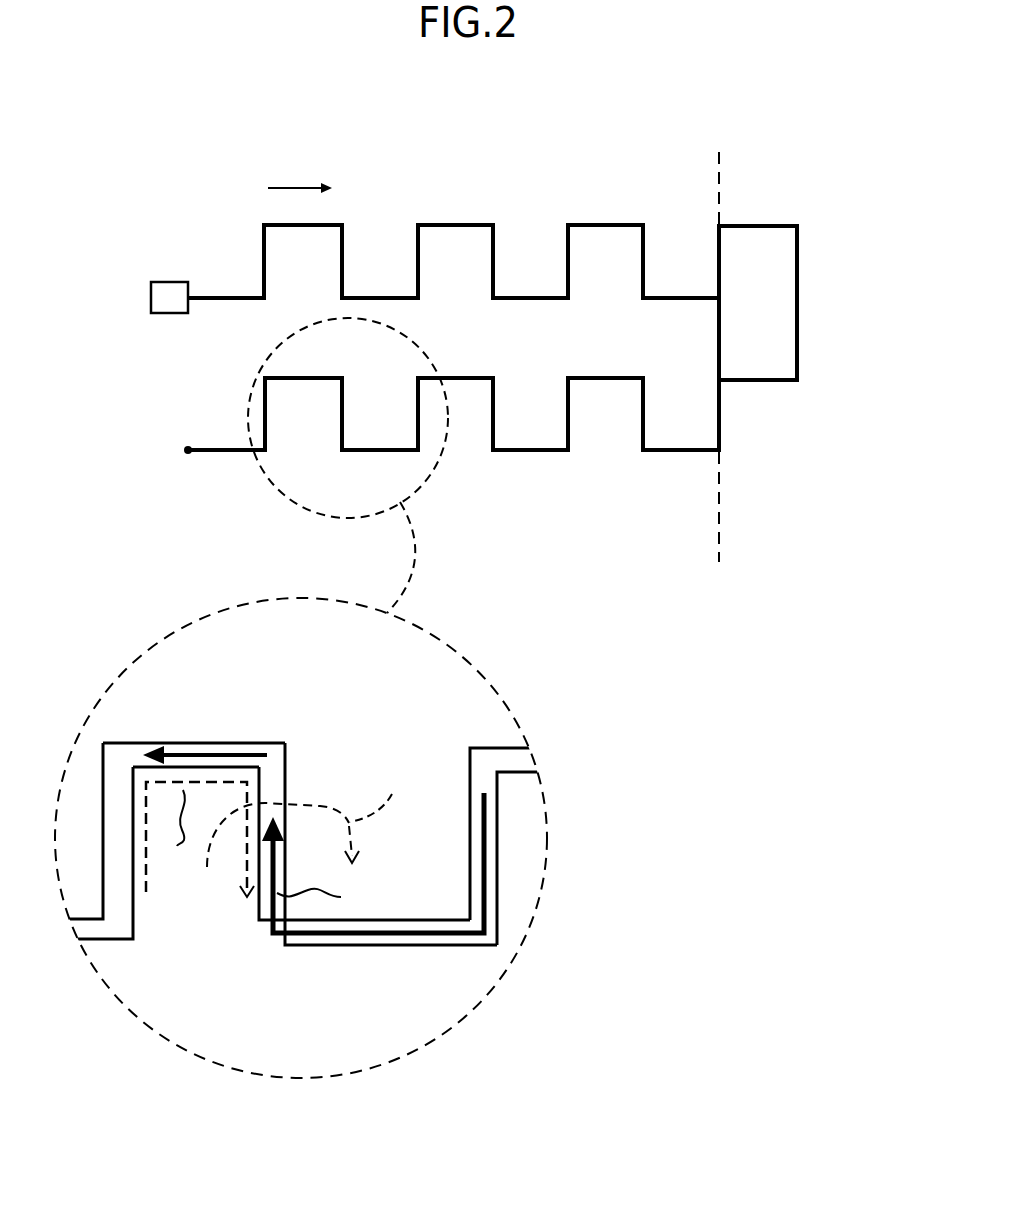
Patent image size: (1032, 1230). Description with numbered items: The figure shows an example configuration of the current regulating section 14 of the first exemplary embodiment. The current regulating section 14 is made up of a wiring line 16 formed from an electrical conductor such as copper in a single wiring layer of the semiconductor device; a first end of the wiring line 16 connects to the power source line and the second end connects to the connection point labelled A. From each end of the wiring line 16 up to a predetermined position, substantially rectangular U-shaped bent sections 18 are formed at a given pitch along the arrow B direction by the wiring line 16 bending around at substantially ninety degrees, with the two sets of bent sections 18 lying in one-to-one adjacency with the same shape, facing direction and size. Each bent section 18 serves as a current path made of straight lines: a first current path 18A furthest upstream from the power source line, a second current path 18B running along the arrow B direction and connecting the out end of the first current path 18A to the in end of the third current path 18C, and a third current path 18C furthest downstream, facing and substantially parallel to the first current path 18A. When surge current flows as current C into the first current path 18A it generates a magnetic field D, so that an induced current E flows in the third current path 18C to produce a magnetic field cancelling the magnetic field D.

The current regulating section 14 is at (834, 194).
The wiring line 16 is at (797, 340).
The bent section 18 is at (254, 249).
The first current path 18A is at (257, 924).
The second current path 18B is at (271, 744).
The third current path 18C is at (136, 921).